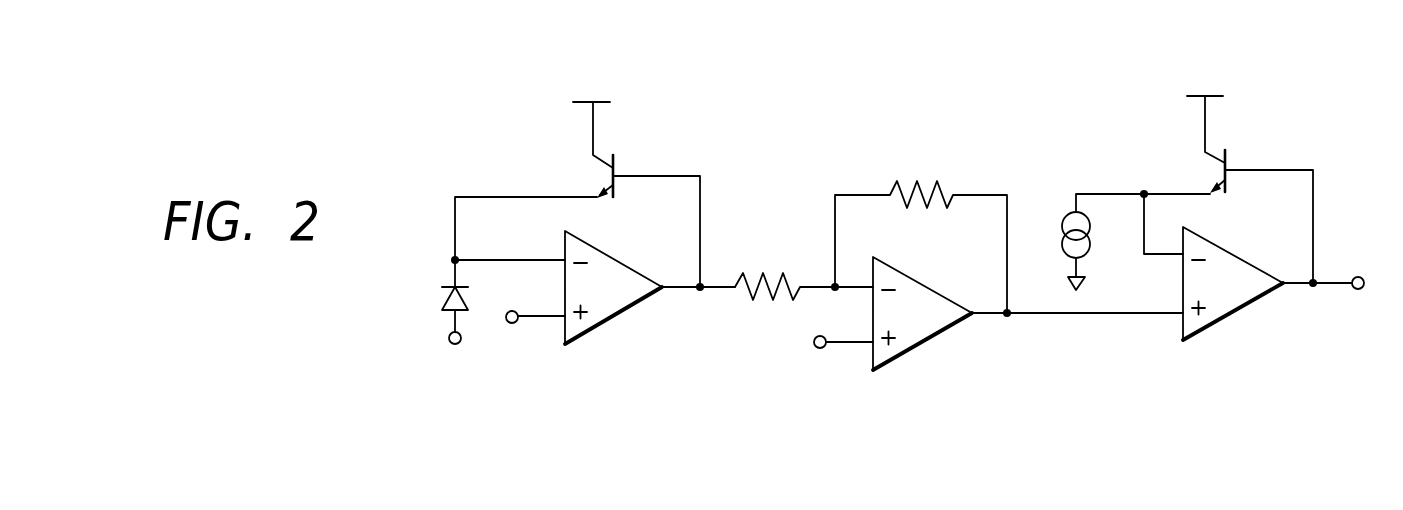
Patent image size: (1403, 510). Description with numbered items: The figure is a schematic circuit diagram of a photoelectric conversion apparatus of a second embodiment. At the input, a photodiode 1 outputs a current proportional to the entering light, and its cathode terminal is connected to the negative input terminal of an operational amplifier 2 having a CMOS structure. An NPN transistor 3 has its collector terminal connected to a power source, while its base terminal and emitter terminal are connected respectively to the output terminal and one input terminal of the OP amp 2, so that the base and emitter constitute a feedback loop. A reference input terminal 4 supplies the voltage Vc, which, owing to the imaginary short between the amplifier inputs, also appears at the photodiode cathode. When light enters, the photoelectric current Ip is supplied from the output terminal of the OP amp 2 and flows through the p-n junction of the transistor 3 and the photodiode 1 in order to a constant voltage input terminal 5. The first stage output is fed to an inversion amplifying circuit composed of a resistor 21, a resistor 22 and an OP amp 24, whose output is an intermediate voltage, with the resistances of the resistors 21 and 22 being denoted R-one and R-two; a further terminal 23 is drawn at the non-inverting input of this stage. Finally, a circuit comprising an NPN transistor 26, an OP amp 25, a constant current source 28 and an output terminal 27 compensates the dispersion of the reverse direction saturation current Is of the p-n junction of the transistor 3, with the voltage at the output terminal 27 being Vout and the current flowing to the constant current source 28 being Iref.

The photodiode 1 is at (442, 290).
The operational amplifier 2 is at (622, 326).
The NPN transistor 3 is at (592, 172).
The reference input terminal 4 is at (507, 324).
The constant voltage input terminal 5 is at (452, 346).
The resistor 21 is at (768, 272).
The resistor 22 is at (925, 182).
The control voltage input terminal 23 is at (826, 349).
The OP amp 24 is at (925, 346).
The OP amp 25 is at (1240, 318).
The NPN transistor 26 is at (1205, 170).
The output terminal 27 is at (1353, 292).
The constant current source 28 is at (1063, 210).